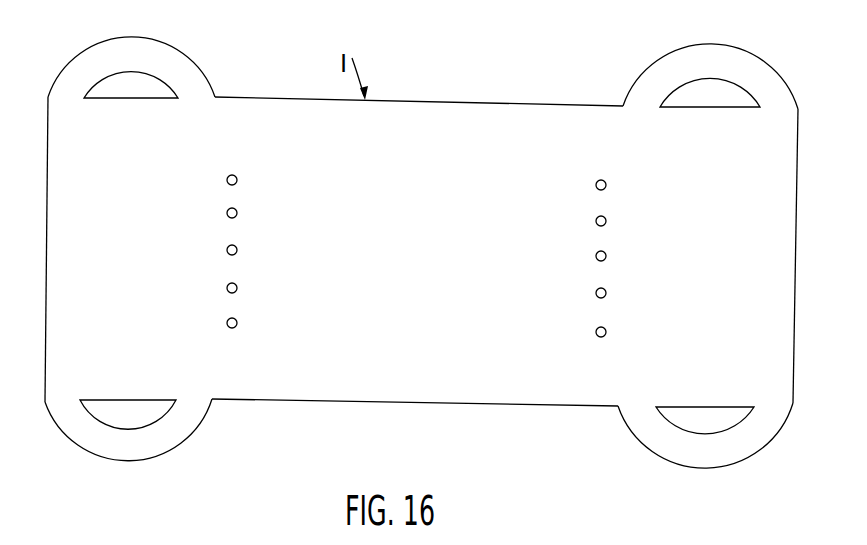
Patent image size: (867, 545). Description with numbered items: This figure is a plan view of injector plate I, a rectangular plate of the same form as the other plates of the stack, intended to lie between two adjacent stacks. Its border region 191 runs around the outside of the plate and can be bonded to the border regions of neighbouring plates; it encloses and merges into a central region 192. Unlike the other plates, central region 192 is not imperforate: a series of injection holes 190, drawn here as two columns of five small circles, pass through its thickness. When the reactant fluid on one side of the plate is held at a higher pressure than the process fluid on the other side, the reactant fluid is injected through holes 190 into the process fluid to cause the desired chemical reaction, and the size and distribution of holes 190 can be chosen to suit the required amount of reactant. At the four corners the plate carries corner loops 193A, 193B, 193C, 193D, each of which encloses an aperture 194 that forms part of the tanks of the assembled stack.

The injection holes 190 is at (227, 213).
The border region 191 is at (465, 392).
The central region 192 is at (434, 269).
The corner loop 193A is at (177, 65).
The corner loop 193B is at (738, 442).
The corner loop 193C is at (747, 70).
The corner loop 193D is at (157, 442).
The aperture 194 is at (112, 83).